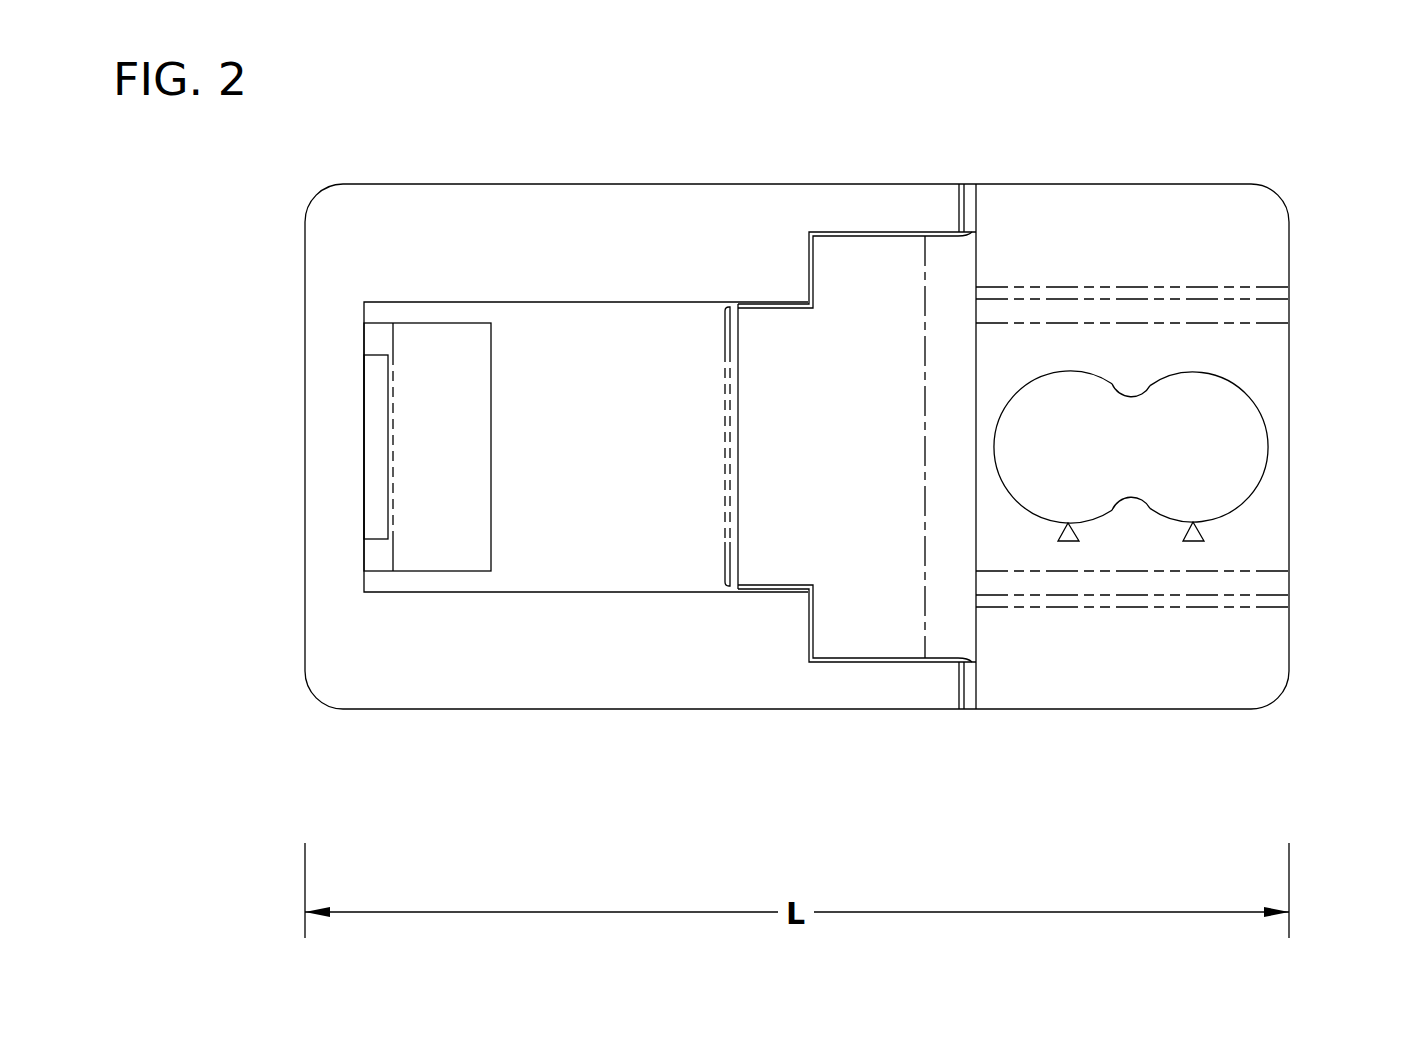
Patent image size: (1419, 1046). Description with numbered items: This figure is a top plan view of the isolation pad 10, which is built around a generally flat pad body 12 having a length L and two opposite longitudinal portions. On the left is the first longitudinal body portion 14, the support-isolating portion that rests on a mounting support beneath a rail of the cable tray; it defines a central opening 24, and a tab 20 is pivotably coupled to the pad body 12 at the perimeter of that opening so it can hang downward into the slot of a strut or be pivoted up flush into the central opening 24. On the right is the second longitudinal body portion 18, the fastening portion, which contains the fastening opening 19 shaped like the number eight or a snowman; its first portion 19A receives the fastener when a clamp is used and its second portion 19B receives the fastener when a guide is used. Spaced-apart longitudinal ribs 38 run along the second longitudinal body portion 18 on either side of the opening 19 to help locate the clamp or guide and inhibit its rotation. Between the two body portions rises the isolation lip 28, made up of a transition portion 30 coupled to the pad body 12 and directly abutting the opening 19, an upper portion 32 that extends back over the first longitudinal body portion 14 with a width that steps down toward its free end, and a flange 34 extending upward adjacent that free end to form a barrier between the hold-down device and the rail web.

The isolation pad 10 is at (1207, 118).
The pad body 12 is at (650, 184).
The first longitudinal body portion 14 is at (528, 712).
The second longitudinal body portion 18 is at (1152, 712).
The fastening opening 19 is at (1163, 452).
The first portion of the opening 19A is at (1052, 373).
The second portion of the opening 19B is at (1233, 498).
The tab 20 is at (446, 473).
The central opening 24 is at (612, 497).
The isolation lip 28 is at (880, 663).
The transition portion 30 is at (960, 266).
The upper portion 32 is at (878, 297).
The flange 34 is at (728, 557).
The longitudinal ribs 38 is at (1151, 244).